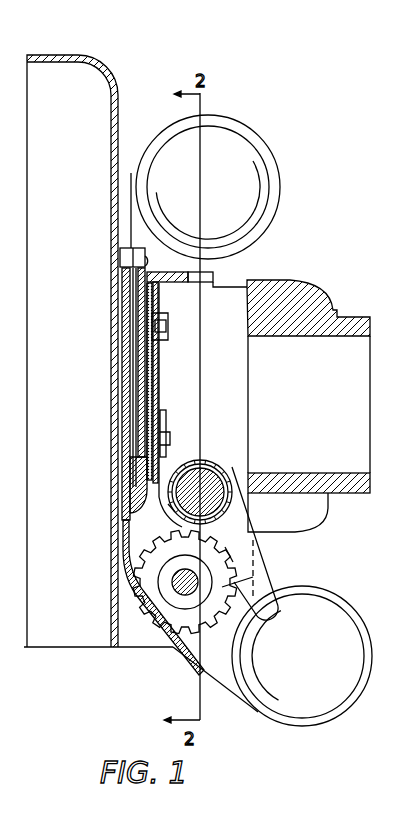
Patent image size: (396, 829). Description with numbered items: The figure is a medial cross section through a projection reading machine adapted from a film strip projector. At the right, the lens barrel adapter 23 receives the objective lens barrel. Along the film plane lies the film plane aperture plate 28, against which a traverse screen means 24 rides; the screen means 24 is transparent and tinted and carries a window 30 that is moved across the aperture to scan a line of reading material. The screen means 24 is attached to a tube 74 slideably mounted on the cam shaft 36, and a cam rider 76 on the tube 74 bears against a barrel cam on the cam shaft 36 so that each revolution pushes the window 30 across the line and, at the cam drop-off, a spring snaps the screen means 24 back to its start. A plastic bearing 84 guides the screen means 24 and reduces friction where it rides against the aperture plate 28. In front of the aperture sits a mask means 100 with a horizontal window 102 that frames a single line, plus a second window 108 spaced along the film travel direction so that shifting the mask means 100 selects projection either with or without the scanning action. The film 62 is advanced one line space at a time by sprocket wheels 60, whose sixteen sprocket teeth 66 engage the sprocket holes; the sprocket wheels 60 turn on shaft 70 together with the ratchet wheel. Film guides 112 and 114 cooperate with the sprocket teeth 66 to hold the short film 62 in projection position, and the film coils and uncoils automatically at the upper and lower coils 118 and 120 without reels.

The lens barrel adapter 23 is at (347, 320).
The traverse screen means 24 is at (167, 413).
The film plane aperture plate 28 is at (150, 355).
The window 30 is at (166, 432).
The cam shaft 36 is at (232, 467).
The sprocket wheels 60 is at (222, 587).
The film 62 is at (238, 700).
The sprocket teeth 66 is at (233, 562).
The shaft 70 is at (172, 587).
The tube 74 is at (204, 462).
The cam rider 76 is at (172, 502).
The plastic bearing 84 is at (163, 410).
The mask means 100 is at (147, 397).
The horizontal window 102 is at (147, 428).
The second window 108 is at (142, 377).
The film guide 112 is at (122, 473).
The film guide 114 is at (133, 489).
The film coil 118 is at (291, 178).
The film coil 120 is at (360, 693).